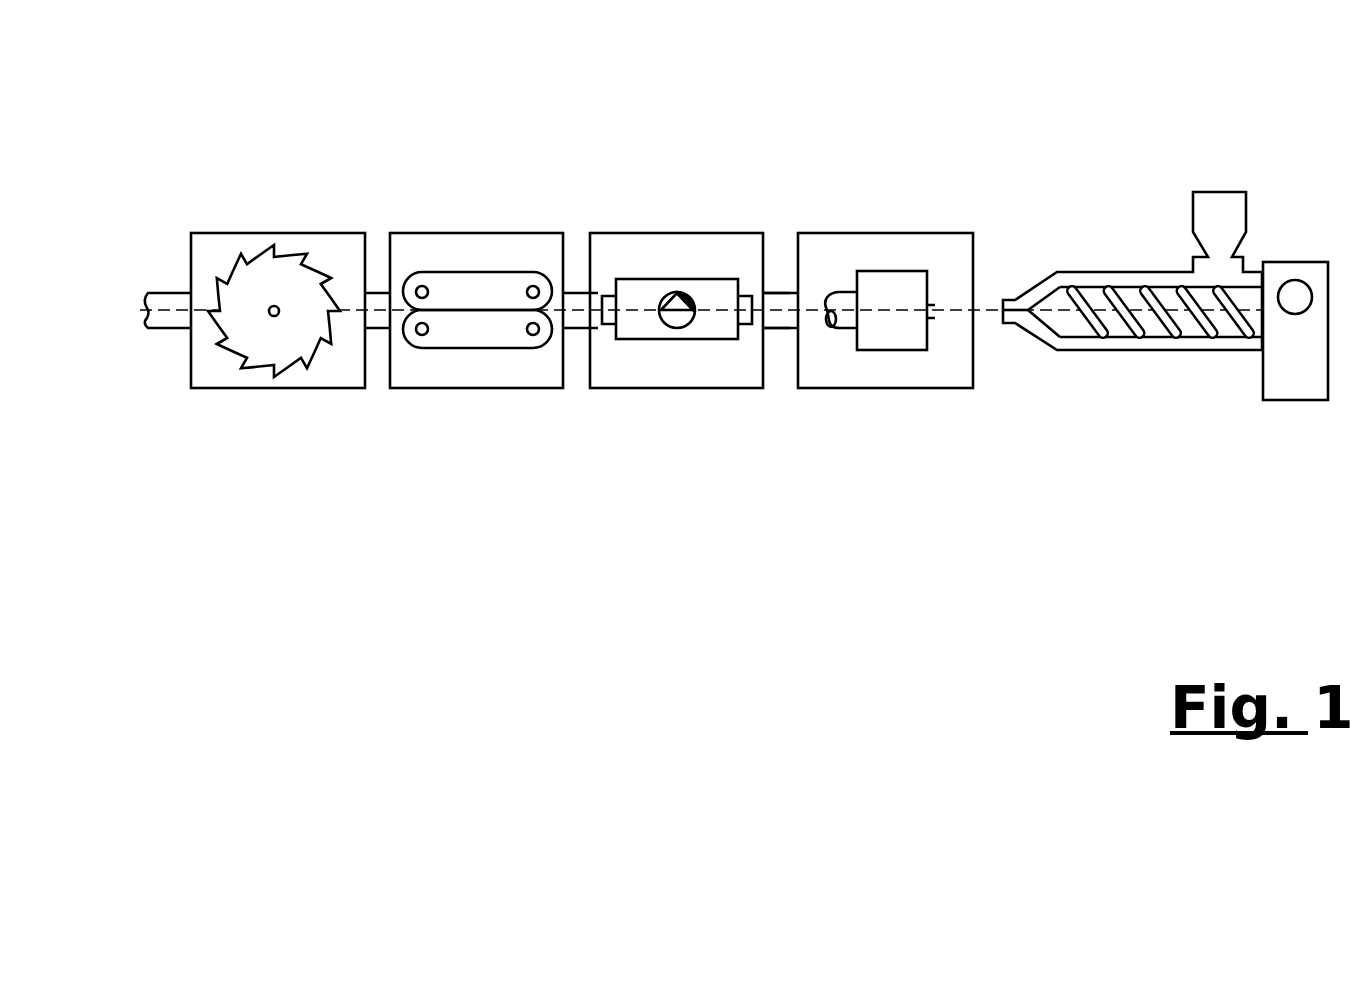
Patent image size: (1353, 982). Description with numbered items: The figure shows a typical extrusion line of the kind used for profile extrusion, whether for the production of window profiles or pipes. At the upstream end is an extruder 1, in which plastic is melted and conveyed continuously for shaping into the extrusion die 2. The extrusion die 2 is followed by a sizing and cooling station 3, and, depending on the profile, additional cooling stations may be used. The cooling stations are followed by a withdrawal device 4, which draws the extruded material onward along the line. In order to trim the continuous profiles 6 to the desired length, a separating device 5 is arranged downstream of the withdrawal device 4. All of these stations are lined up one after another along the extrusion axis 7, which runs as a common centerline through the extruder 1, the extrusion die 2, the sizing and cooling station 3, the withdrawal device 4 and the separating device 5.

The extruder 1 is at (1140, 300).
The extrusion die 2 is at (906, 258).
The sizing and cooling station 3 is at (683, 258).
The withdrawal device 4 is at (510, 258).
The separating device 5 is at (284, 283).
The continuous profiles 6 is at (161, 293).
The extrusion axis 7 is at (988, 310).